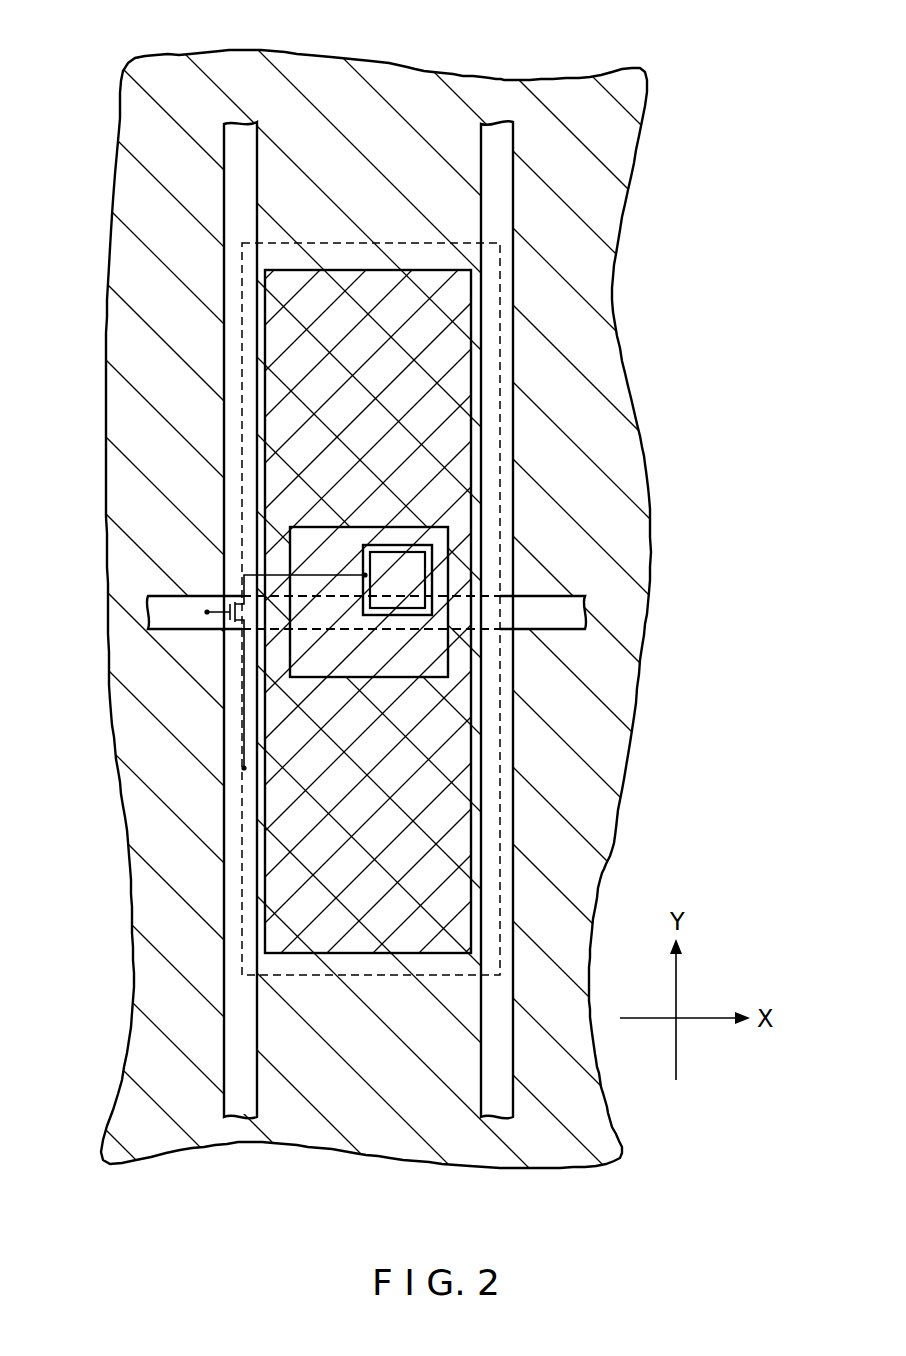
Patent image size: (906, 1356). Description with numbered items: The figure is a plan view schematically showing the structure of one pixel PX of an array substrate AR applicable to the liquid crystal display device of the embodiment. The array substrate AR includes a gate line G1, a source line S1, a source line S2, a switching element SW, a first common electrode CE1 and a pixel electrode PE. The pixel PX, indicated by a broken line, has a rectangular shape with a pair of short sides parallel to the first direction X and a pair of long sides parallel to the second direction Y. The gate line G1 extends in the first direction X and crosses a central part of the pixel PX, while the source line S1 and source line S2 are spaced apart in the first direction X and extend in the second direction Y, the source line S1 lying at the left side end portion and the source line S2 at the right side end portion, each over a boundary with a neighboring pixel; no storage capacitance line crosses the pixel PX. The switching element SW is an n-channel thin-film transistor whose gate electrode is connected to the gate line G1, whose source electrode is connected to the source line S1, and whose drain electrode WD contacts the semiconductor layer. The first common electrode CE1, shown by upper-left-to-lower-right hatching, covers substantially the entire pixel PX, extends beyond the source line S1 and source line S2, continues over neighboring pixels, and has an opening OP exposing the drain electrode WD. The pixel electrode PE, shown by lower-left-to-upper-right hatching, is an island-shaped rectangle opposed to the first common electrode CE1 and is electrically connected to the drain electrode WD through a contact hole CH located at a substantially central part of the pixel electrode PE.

The source line S1 is at (237, 123).
The source line S2 is at (494, 123).
The pixel PX is at (511, 236).
The array substrate AR is at (642, 227).
The pixel electrode PE is at (458, 382).
The switching element SW is at (232, 578).
The first common electrode CE1 is at (652, 510).
The drain electrode WD is at (433, 560).
The contact hole CH is at (430, 582).
The gate line G1 is at (147, 612).
The opening OP is at (450, 676).